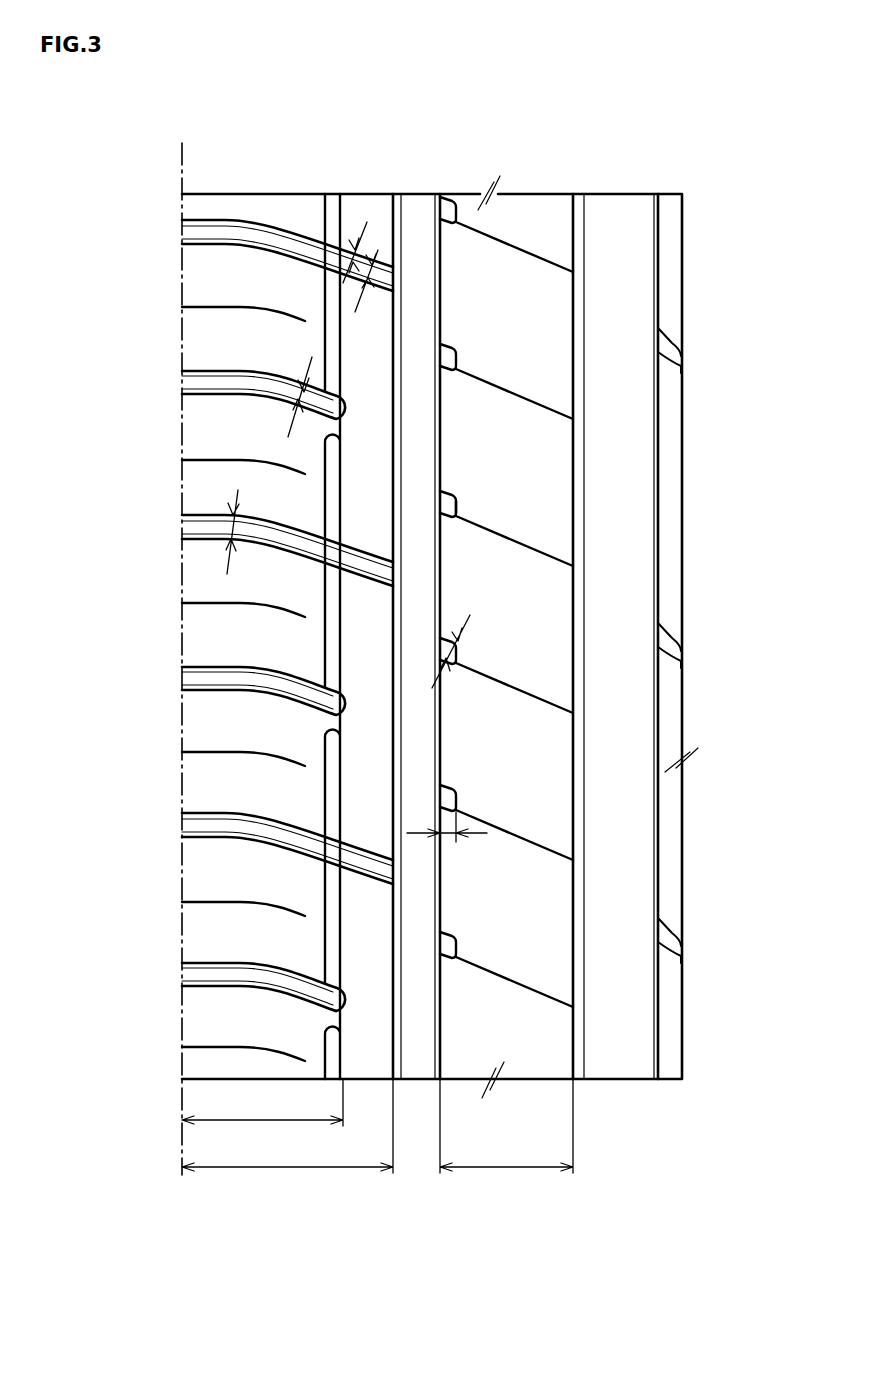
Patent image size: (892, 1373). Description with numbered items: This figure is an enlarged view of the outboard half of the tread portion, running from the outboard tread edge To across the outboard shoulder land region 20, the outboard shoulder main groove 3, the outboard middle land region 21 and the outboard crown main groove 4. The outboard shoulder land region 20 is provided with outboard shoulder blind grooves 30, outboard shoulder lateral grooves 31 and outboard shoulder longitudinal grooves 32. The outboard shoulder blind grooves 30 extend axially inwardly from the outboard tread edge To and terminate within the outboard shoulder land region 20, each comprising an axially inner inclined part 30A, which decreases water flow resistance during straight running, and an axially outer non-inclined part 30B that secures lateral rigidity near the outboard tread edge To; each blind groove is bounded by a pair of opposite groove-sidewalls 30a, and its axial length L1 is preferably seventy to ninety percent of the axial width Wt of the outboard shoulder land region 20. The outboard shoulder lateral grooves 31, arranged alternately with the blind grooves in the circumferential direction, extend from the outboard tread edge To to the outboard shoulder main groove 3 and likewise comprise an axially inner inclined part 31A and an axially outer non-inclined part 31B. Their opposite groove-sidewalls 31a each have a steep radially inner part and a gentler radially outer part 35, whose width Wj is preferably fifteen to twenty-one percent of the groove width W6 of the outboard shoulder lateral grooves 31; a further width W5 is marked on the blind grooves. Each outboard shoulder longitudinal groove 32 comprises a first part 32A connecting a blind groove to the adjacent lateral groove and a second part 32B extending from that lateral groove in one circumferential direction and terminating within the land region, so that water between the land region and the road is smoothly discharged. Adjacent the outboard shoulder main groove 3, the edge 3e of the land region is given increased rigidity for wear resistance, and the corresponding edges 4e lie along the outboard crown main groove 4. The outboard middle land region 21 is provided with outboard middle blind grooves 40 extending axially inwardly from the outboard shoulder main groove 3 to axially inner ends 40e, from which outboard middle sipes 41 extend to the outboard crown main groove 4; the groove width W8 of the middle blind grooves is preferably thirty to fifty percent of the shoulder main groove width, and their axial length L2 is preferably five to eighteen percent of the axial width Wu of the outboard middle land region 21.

The outboard tread edge To is at (182, 203).
The outboard shoulder land region 20 is at (274, 276).
The radially outer part 35 is at (224, 526).
The groove-sidewall 31a is at (215, 223).
The width of the radially outer part Wj is at (355, 249).
The outboard shoulder blind groove 30 is at (187, 691).
The axially inner inclined part 30A is at (300, 986).
The axially outer non-inclined part 30B is at (204, 977).
The width dimension of groove 30 W5 is at (300, 400).
The groove width of the outboard shoulder lateral grooves W6 is at (232, 512).
The outboard shoulder lateral groove 31 is at (215, 558).
The axially outer non-inclined part 31B is at (205, 527).
The axially inner inclined part 31A is at (300, 548).
The outboard shoulder longitudinal groove 32 is at (208, 754).
The second part 32B is at (332, 758).
The first part 32A is at (330, 893).
The groove-sidewall 30a is at (216, 668).
The outboard shoulder main groove 3 is at (418, 623).
The edge of the land region 3e is at (403, 1013).
The outboard middle land region 21 is at (599, 563).
The outboard middle blind groove 40 is at (453, 497).
The axially inner end 40e is at (458, 505).
The outboard middle sipe 41 is at (462, 545).
The groove width of the outboard middle blind grooves W8 is at (460, 651).
The axial length of the outboard middle blind groove L2 is at (458, 843).
The outboard crown main groove 4 is at (608, 623).
The edge of circumferential groove 4 4e is at (580, 1045).
The axial length of the outboard shoulder blind grooves L1 is at (262, 1102).
The axial width of the outboard shoulder land region Wt is at (287, 1126).
The axial width of the outboard middle land region Wu is at (506, 1126).